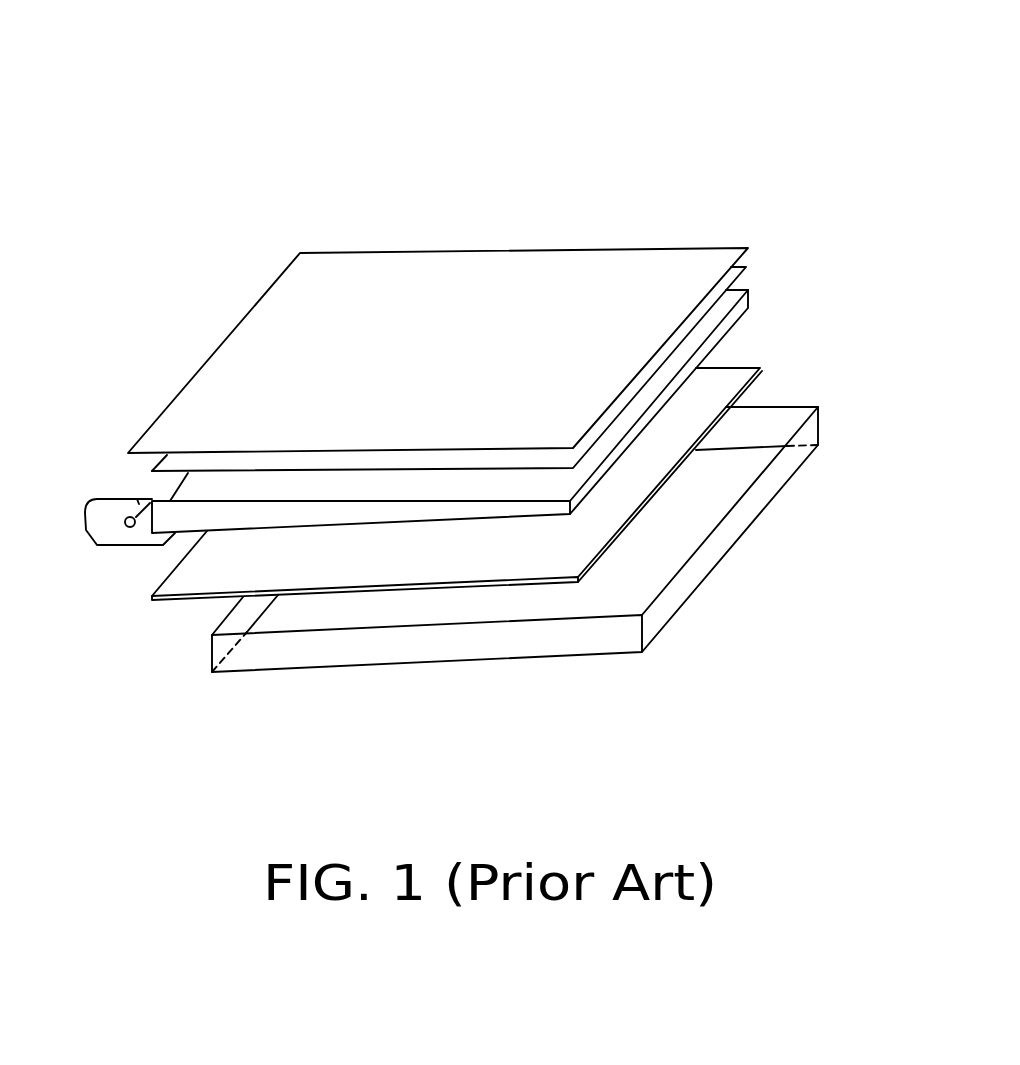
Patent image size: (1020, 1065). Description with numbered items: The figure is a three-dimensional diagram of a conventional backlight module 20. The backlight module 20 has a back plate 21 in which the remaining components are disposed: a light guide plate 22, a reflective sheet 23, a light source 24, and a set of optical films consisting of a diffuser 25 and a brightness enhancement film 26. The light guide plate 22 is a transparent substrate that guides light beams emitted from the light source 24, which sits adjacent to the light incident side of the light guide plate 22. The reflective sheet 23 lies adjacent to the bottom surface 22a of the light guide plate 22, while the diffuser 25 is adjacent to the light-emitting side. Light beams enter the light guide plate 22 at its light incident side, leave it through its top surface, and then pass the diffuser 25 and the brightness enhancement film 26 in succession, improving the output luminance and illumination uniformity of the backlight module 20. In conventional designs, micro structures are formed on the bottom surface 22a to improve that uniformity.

The backlight module 20 is at (826, 62).
The back plate 21 is at (820, 423).
The light guide plate 22 is at (152, 527).
The bottom surface 22a is at (737, 321).
The reflective sheet 23 is at (181, 600).
The light source 24 is at (130, 517).
The diffuser 25 is at (745, 268).
The brightness enhancement film 26 is at (748, 248).